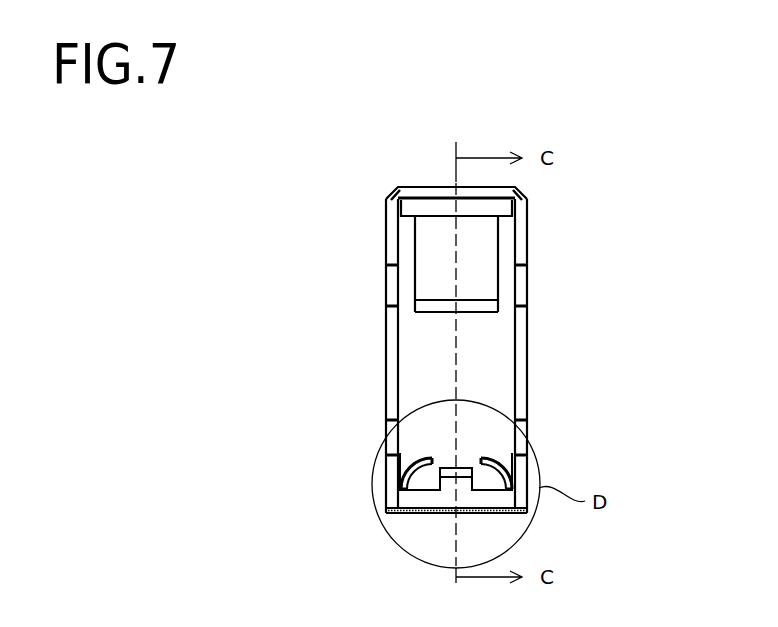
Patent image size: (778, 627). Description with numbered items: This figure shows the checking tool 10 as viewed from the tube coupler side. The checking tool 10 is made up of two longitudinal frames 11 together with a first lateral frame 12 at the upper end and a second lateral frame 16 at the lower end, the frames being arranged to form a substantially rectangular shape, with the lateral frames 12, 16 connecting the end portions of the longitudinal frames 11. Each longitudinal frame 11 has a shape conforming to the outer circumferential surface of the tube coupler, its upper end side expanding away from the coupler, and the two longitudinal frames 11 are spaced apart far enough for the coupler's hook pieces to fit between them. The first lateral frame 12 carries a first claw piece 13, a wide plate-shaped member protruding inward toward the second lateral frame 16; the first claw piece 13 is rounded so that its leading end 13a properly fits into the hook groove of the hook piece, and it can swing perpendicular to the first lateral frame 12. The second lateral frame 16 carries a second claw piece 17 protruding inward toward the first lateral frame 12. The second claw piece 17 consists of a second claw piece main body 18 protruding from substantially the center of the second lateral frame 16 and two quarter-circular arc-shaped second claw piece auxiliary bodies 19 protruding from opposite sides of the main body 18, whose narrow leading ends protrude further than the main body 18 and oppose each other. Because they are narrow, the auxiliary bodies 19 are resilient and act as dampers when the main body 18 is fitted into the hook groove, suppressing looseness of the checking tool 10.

The checking tool 10 is at (566, 222).
The longitudinal frame 11 is at (388, 333).
The first lateral frame 12 is at (420, 193).
The first claw piece 13 is at (420, 248).
The leading end 13a is at (477, 313).
The second lateral frame 16 is at (433, 503).
The second claw piece 17 is at (492, 455).
The second claw piece main body 18 is at (447, 480).
The second claw piece auxiliary body 19 is at (423, 462).